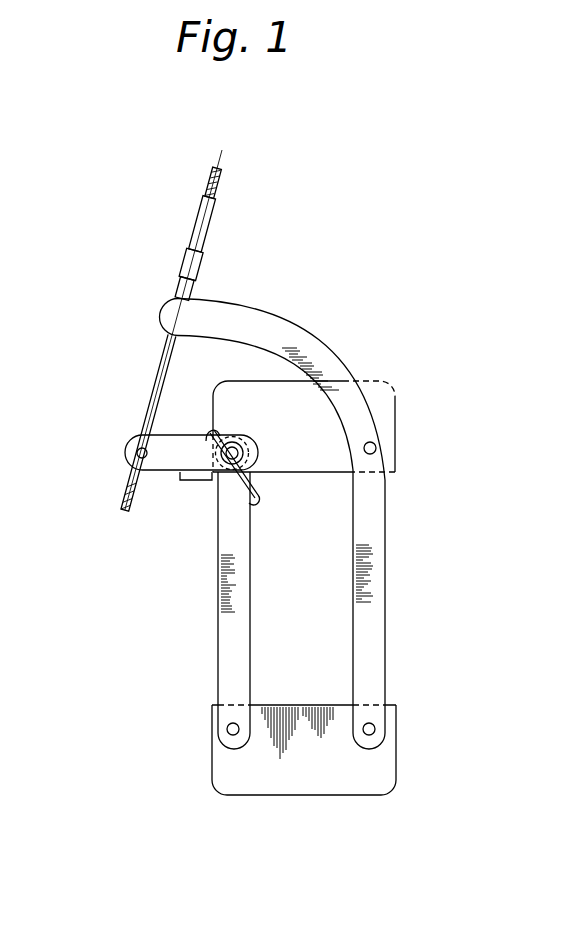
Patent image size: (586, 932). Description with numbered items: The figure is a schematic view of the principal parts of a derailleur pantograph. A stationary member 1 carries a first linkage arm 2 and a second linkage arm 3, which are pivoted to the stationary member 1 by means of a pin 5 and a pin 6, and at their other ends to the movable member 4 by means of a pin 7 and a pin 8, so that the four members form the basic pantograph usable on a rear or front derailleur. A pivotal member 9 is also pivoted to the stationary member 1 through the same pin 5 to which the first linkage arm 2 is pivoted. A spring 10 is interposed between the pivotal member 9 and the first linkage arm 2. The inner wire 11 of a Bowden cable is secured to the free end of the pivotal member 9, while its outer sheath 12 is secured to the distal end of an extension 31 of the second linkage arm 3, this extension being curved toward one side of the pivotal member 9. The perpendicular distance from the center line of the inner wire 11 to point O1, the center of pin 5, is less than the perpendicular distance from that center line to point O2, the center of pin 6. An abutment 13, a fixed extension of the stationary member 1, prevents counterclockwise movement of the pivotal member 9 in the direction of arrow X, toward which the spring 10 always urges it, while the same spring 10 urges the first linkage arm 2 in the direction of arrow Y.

The stationary member 1 is at (312, 455).
The first linkage arm 2 is at (223, 653).
The second linkage arm 3 is at (374, 635).
The movable member 4 is at (305, 780).
The pin 5 is at (233, 441).
The pin 6 is at (375, 443).
The pin 7 is at (228, 734).
The pin 8 is at (375, 728).
The pivotal member 9 is at (163, 437).
The spring 10 is at (208, 432).
The inner wire 11 is at (218, 185).
The outer sheath 12 is at (207, 230).
The abutment 13 is at (192, 481).
The extension 31 is at (170, 314).
The center of pin 5 O1 is at (212, 473).
The center of pin 6 O2 is at (378, 447).